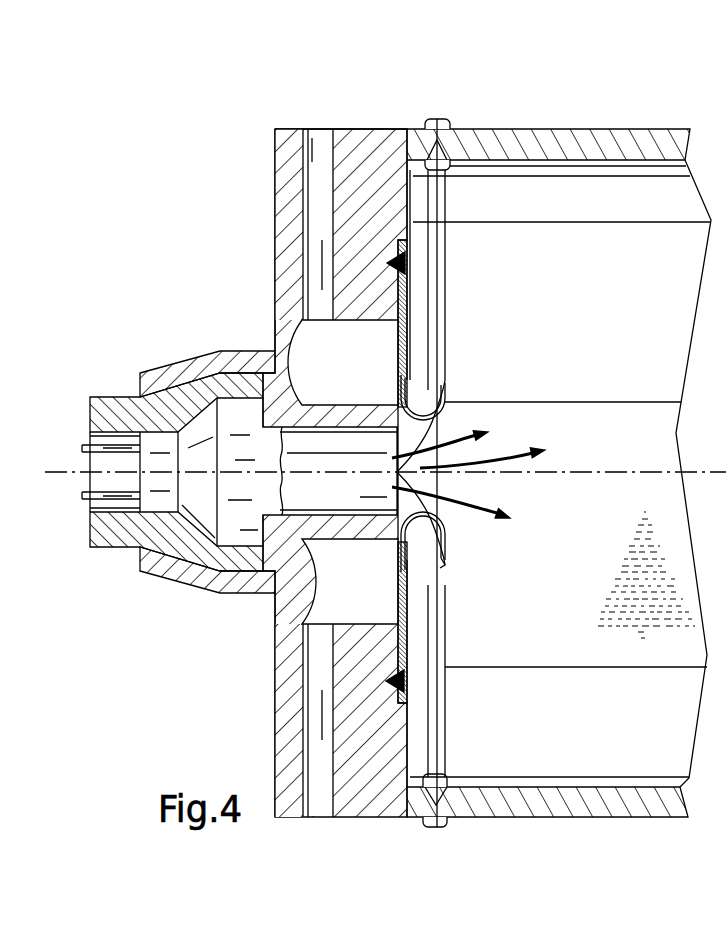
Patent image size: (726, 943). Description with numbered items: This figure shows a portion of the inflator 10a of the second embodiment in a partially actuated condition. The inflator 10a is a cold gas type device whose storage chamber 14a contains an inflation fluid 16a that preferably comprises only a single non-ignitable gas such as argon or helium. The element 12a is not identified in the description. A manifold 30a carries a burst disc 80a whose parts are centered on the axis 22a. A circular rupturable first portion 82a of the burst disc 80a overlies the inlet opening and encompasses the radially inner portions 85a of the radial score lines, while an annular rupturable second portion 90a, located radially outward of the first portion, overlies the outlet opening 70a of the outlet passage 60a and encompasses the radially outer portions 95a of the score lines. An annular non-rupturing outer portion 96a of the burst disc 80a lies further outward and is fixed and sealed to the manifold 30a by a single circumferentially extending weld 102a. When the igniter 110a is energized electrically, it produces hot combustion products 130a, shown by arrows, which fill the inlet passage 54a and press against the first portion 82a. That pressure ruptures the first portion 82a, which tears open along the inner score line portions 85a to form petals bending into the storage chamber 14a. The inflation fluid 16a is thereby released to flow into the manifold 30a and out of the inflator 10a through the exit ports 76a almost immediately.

The inflator 10a is at (530, 117).
The combustor wall 12a is at (621, 117).
The storage chamber 14a is at (658, 336).
The inflation fluid 16a is at (633, 573).
The axis 22a is at (67, 470).
The manifold 30a is at (362, 126).
The inlet passage 54a is at (345, 504).
The outlet passage 60a is at (308, 367).
The outlet opening 70a is at (405, 602).
The exit ports 76a is at (323, 157).
The burst disc 80a is at (412, 295).
The first portion of burst disc 82a is at (447, 409).
The radially inner portions of score lines 85a is at (449, 563).
The second portion of burst disc 90a is at (414, 340).
The radially outer portions of score lines 95a is at (406, 378).
The non-rupturing outer portion of burst disc 96a is at (405, 653).
The weld 102a is at (405, 683).
The igniter 110a is at (173, 520).
The combustion products 130a is at (477, 498).